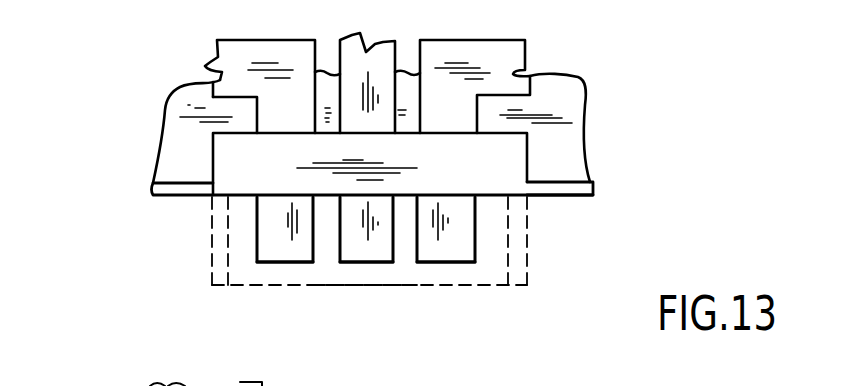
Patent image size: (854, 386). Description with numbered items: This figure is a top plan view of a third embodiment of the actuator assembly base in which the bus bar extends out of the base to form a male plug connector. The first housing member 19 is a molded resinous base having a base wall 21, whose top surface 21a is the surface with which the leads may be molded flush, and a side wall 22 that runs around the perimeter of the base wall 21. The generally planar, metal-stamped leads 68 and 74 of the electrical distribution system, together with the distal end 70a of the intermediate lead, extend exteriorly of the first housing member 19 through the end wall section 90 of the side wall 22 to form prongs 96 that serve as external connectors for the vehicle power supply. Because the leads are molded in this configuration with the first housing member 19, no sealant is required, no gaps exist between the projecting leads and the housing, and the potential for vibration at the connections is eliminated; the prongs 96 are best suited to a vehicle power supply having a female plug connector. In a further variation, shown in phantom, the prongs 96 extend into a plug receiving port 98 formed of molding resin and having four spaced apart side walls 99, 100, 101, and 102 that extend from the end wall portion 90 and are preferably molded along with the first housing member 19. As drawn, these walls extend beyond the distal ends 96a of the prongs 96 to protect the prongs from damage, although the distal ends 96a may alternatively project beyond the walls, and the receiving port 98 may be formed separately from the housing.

The first housing member 19 is at (650, 63).
The base wall 21 is at (563, 160).
The top surface 21a is at (536, 101).
The side wall 22 is at (587, 197).
The lead 68 is at (238, 57).
The distal end 70a is at (353, 67).
The lead 74 is at (478, 55).
The end wall section 90 is at (535, 197).
The prongs 96 is at (363, 240).
The distal ends 96a is at (287, 252).
The plug receiving port 98 is at (208, 261).
The side wall 99 is at (532, 305).
The side wall 100 is at (213, 287).
The side wall 101 is at (350, 273).
The side wall 102 is at (242, 275).